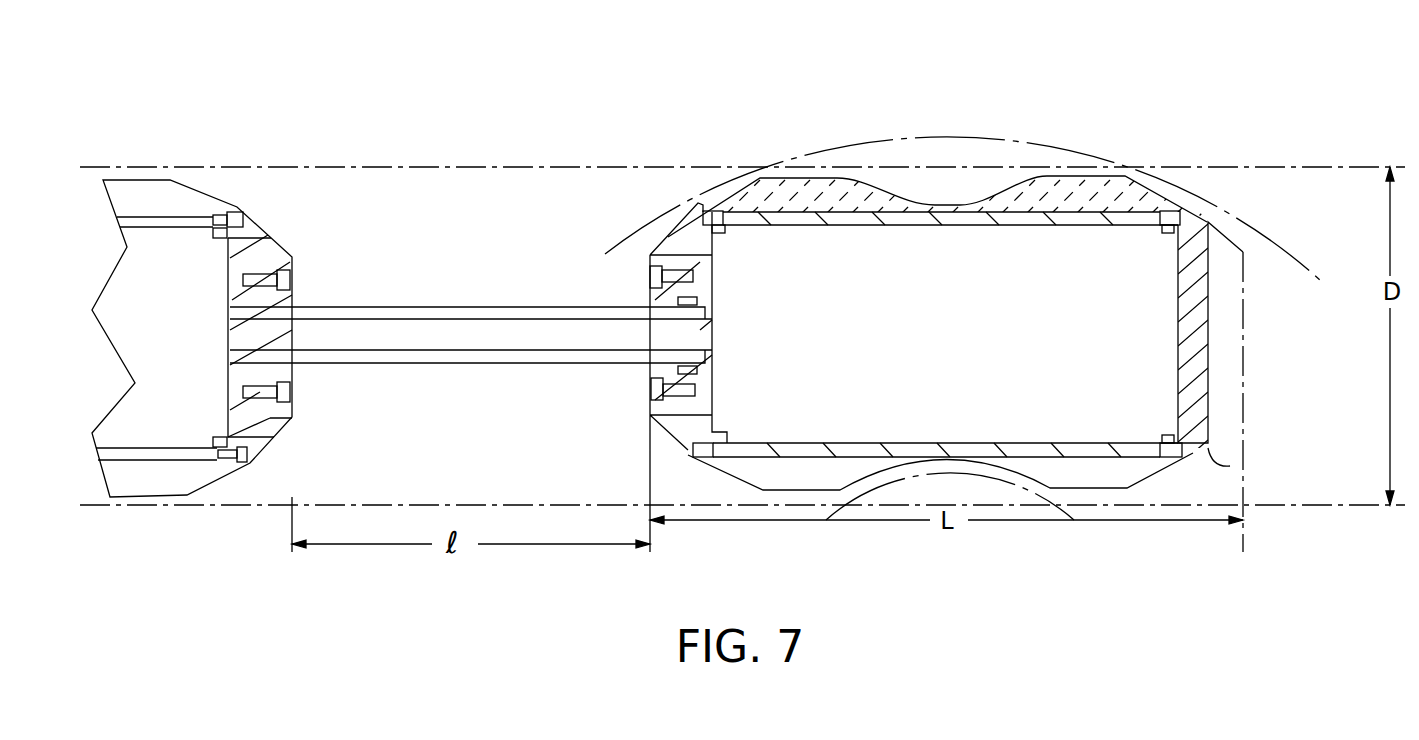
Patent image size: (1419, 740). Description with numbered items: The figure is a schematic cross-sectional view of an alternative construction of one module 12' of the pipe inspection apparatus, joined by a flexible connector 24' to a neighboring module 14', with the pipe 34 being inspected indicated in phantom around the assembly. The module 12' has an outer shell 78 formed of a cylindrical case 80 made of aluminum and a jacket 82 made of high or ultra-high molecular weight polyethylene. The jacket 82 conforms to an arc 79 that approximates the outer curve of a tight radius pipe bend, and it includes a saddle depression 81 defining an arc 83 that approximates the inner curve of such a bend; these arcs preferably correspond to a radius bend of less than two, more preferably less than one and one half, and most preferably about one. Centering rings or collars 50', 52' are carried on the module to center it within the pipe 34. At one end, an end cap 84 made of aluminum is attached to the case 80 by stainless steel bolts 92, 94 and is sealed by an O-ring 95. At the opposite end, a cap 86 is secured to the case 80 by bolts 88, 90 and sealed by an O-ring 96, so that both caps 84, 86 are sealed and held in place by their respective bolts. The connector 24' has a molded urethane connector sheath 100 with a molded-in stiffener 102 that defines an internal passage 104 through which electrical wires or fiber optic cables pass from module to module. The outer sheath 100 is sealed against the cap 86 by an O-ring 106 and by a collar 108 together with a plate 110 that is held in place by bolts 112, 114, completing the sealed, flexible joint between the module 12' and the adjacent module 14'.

The module 12' is at (929, 131).
The module 14' is at (192, 295).
The connector 24' is at (471, 386).
The pipe 34 is at (255, 507).
The centering ring 50' is at (945, 389).
The centering ring 52' is at (940, 512).
The outer shell 78 is at (915, 188).
The arc 79 is at (977, 137).
The cylindrical case 80 is at (795, 210).
The saddle depression 81 is at (920, 465).
The jacket 82 is at (822, 178).
The arc 83 is at (990, 482).
The end cap 84 is at (1208, 283).
The cap 86 is at (667, 237).
The bolt 88 is at (708, 205).
The bolt 90 is at (688, 470).
The bolt 92 is at (1190, 218).
The bolt 94 is at (1222, 467).
The O-ring 95 is at (1163, 233).
The O-ring 96 is at (722, 233).
The connector sheath 100 is at (542, 306).
The stiffener 102 is at (598, 312).
The internal passage 104 is at (515, 337).
The O-ring 106 is at (665, 275).
The collar 108 is at (647, 366).
The plate 110 is at (652, 432).
The bolt 112 is at (647, 400).
The bolt 114 is at (698, 272).